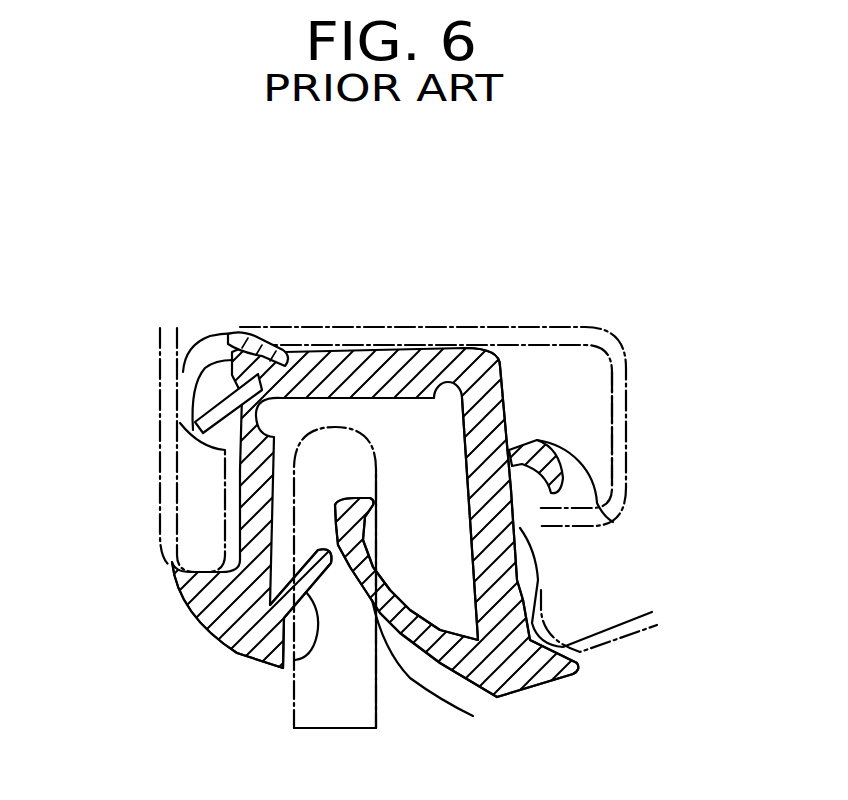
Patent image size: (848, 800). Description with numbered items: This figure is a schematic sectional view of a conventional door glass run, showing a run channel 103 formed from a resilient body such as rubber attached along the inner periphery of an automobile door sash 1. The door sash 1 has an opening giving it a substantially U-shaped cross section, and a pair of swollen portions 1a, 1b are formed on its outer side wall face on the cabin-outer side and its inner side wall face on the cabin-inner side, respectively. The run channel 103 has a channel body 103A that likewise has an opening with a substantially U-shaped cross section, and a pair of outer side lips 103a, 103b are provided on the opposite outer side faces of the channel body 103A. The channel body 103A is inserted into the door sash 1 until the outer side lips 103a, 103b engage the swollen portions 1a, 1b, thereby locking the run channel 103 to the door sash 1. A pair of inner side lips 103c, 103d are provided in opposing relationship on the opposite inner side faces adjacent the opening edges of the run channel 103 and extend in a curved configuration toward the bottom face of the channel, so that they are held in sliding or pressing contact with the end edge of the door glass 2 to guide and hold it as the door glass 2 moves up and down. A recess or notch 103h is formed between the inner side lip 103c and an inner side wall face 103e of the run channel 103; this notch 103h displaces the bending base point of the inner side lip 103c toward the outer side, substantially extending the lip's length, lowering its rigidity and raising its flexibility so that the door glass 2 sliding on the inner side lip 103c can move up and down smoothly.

The door sash 1 is at (590, 328).
The swollen portion 1a is at (190, 408).
The swollen portion 1b is at (627, 393).
The door glass 2 is at (376, 693).
The run channel 103 is at (187, 643).
The outer side lip 103a is at (205, 353).
The inner side wall face 103e is at (283, 385).
The channel body 103A is at (490, 497).
The outer side lip 103b is at (565, 498).
The inner side lip 103d is at (441, 619).
The inner side lip 103c is at (290, 677).
The recess (notch) 103h is at (232, 652).